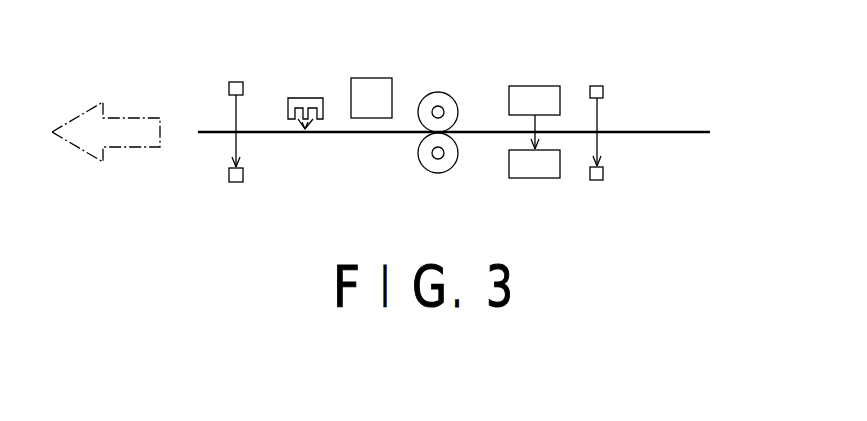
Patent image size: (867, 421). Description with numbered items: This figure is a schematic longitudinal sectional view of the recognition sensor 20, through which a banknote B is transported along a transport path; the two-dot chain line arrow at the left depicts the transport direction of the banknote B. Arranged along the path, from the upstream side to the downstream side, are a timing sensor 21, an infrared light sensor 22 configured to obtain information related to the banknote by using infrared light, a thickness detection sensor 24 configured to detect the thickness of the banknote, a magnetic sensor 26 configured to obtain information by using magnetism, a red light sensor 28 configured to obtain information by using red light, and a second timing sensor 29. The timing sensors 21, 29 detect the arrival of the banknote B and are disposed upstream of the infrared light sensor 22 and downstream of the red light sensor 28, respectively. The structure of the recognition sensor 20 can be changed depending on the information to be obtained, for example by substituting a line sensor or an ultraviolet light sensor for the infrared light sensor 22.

The recognition sensor 20 is at (652, 78).
The banknote B is at (670, 132).
The timing sensor 29 is at (238, 81).
The red light sensor 28 is at (305, 97).
The magnetic sensor 26 is at (373, 77).
The thickness detection sensor 24 is at (440, 91).
The infrared light sensor 22 is at (531, 85).
The timing sensor 21 is at (596, 85).